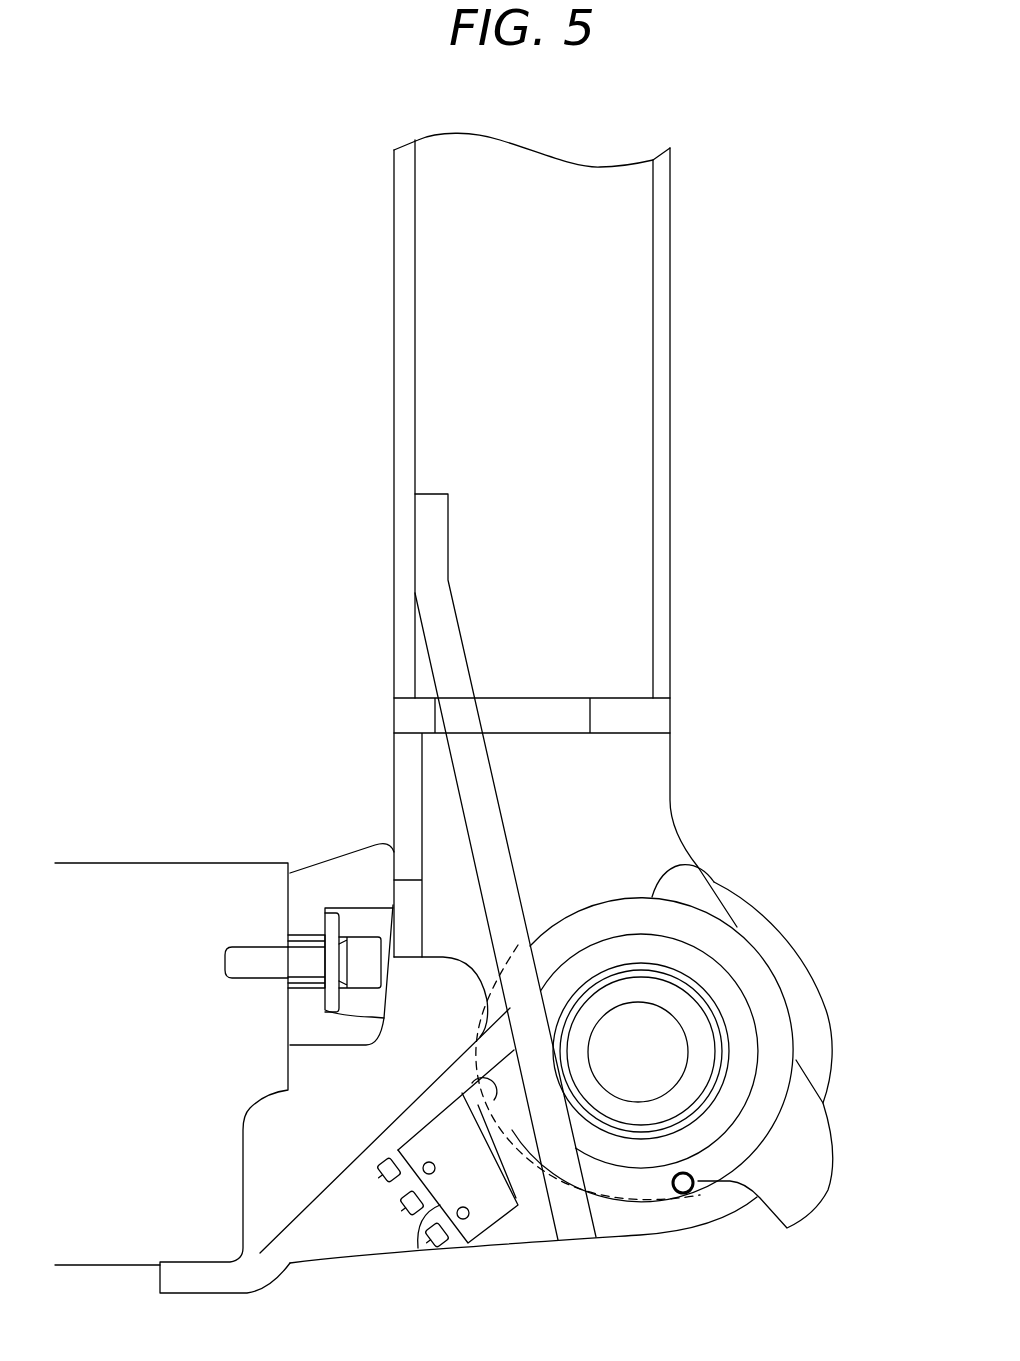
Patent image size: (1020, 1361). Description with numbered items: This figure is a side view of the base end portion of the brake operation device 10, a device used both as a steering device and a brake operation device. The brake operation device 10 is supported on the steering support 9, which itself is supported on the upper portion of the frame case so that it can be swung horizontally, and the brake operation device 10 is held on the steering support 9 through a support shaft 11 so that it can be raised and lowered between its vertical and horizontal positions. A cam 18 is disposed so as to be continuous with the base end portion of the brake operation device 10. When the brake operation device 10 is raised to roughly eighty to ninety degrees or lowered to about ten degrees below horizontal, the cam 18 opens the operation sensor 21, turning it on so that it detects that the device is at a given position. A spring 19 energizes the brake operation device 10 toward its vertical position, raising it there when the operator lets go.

The steering support 9 is at (833, 1034).
The brake operation device 10 is at (672, 484).
The support shaft 11 is at (637, 1070).
The cam 18 is at (692, 866).
The spring 19 is at (446, 667).
The operation sensor 21 is at (428, 1245).